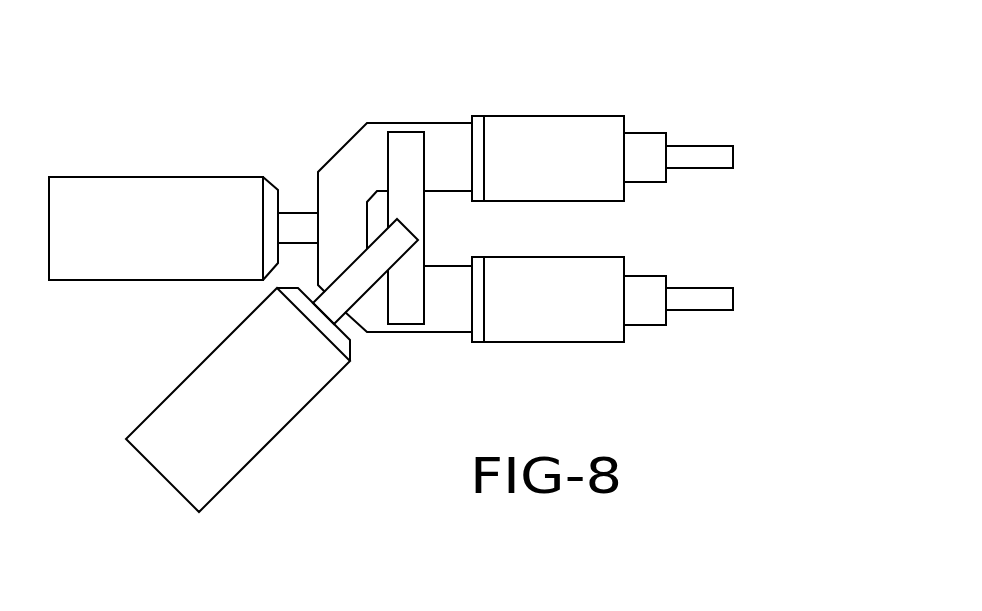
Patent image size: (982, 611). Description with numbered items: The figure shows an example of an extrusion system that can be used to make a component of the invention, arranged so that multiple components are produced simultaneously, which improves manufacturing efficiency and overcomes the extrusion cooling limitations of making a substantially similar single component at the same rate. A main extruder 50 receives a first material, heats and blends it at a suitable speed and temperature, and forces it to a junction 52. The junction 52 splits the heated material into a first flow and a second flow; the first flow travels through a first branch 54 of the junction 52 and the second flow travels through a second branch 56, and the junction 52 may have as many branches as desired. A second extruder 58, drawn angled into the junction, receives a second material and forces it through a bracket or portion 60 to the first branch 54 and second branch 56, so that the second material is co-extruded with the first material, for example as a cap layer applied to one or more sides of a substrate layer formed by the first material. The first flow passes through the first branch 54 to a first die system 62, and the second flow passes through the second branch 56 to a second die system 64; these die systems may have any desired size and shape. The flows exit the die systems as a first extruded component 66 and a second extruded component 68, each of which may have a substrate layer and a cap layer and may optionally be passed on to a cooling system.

The main extruder 50 is at (142, 242).
The junction 52 is at (350, 168).
The first branch 54 is at (450, 142).
The second branch 56 is at (446, 305).
The second extruder 58 is at (222, 413).
The bracket or portion 60 is at (408, 312).
The first die system 62 is at (578, 132).
The second die system 64 is at (578, 325).
The first extruded component 66 is at (717, 152).
The second extruded component 68 is at (718, 305).